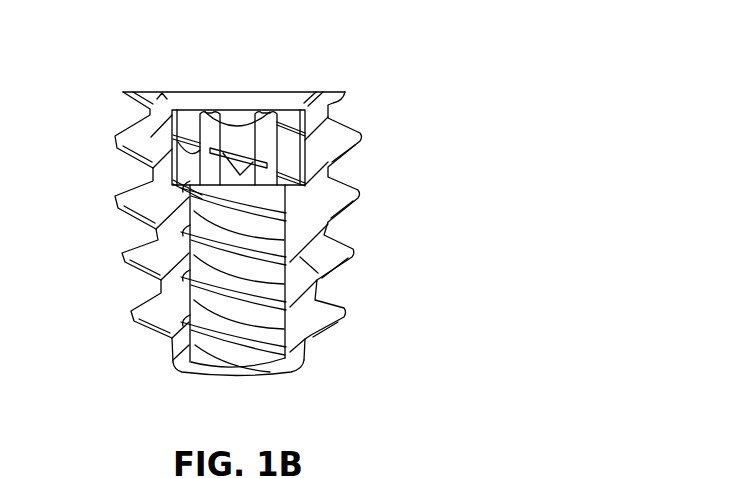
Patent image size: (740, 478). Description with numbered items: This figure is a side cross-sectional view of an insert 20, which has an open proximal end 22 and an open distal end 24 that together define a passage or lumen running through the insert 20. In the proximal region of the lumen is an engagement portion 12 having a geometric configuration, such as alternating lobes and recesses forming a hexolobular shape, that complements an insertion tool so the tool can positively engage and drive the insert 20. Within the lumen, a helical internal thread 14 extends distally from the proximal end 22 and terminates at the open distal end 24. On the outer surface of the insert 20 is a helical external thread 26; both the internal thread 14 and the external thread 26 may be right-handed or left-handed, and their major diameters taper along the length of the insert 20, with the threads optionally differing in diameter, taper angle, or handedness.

The insert 20 is at (418, 108).
The open proximal end 22 is at (283, 98).
The engagement portion 12 is at (203, 112).
The external thread 26 is at (365, 212).
The internal thread 14 is at (238, 254).
The open distal end 24 is at (220, 376).